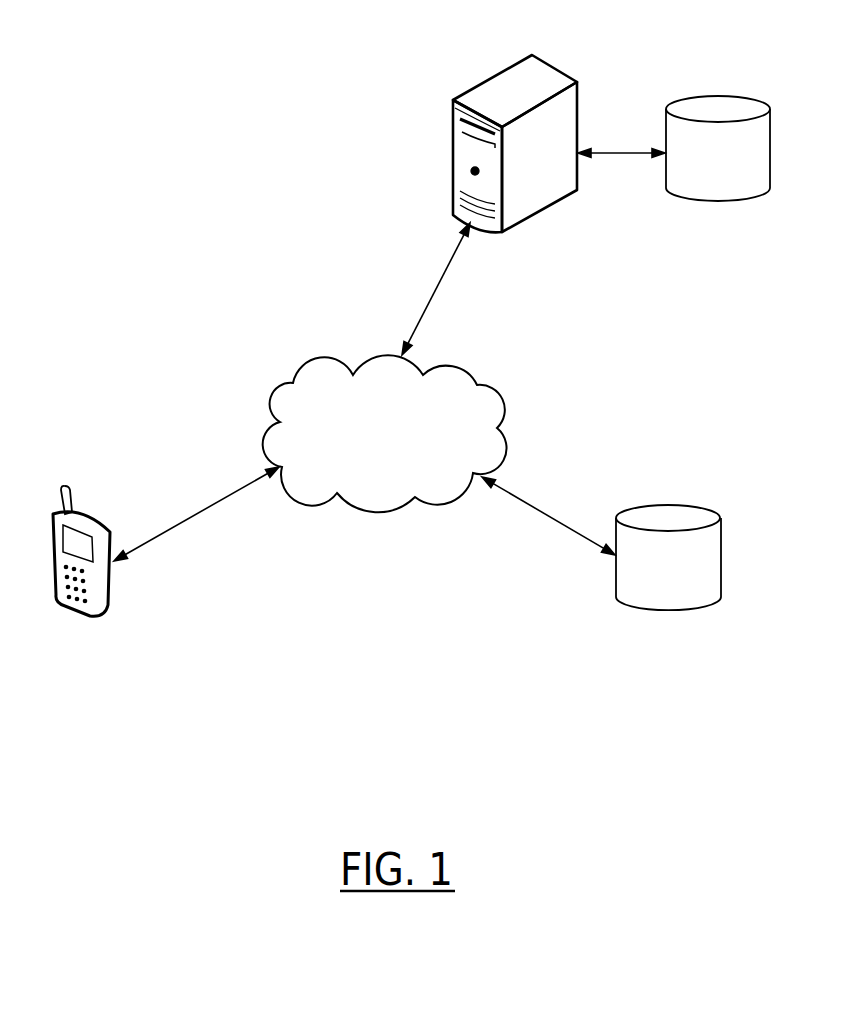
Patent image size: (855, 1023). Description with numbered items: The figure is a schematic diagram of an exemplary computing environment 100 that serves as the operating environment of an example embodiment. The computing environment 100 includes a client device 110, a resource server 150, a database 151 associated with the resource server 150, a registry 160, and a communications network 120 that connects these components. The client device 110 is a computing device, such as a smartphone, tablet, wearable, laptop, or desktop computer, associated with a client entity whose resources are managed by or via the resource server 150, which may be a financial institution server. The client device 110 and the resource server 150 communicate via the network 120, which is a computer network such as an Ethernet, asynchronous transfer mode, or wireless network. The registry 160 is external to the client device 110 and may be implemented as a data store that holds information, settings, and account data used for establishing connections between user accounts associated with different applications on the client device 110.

The computing environment 100 is at (136, 209).
The client device 110 is at (90, 511).
The communications network 120 is at (403, 445).
The resource server 150 is at (513, 72).
The database 151 is at (727, 110).
The registry 160 is at (668, 518).